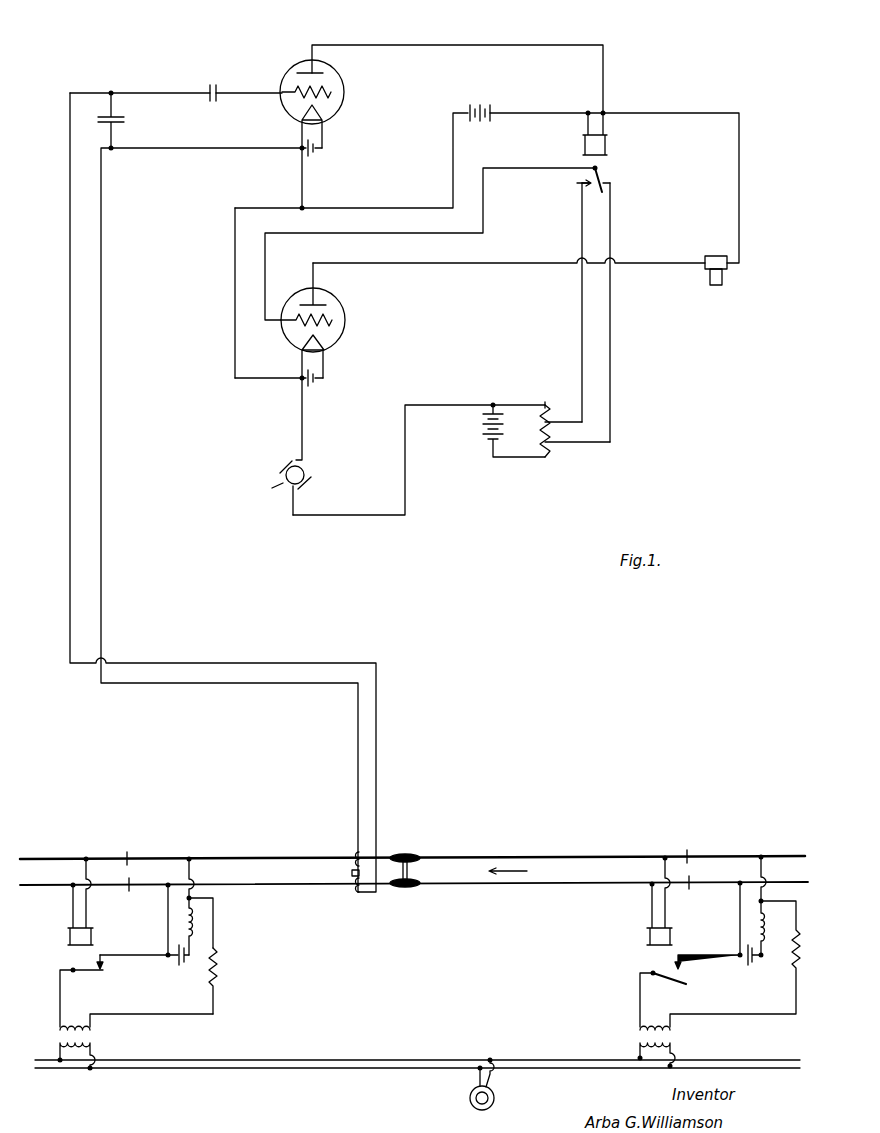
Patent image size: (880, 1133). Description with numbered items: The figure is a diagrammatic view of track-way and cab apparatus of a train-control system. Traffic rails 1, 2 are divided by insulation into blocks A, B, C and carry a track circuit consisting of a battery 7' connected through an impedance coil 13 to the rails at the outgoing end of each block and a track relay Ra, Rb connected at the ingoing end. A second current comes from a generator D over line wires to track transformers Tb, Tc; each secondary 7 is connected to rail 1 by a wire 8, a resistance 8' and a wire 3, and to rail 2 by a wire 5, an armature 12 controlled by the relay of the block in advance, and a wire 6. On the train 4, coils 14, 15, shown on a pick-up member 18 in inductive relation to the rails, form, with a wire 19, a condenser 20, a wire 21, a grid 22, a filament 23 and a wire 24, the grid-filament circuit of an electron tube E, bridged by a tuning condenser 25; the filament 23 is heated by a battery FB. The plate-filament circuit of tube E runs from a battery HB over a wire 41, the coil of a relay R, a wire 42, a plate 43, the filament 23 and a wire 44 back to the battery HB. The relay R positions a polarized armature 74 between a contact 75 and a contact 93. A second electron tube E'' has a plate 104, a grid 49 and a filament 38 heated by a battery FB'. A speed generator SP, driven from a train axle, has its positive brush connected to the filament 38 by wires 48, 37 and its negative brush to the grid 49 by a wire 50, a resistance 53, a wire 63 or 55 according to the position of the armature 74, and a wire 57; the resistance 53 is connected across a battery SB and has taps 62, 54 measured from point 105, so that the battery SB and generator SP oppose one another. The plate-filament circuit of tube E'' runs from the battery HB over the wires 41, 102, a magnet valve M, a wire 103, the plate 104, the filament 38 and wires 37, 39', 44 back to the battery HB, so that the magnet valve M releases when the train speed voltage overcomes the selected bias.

The traffic rail 1 is at (488, 857).
The traffic rail 2 is at (482, 885).
The wire 3 is at (215, 910).
The train 4 is at (409, 855).
The wire 5 is at (58, 993).
The wire 6 is at (166, 914).
The secondary 7 is at (75, 1014).
The battery 7' is at (178, 972).
The wire 8 is at (175, 1010).
The resistance 8' is at (235, 981).
The armature 12 is at (86, 974).
The impedance coil 13 is at (193, 928).
The coil 14 is at (354, 854).
The coil 15 is at (355, 891).
The pickup core 18 is at (351, 873).
The wire 19 is at (70, 412).
The condenser 20 is at (212, 84).
The wire 21 is at (248, 93).
The grid 22 is at (331, 92).
The filament 23 is at (322, 113).
The wire 24 is at (185, 150).
The tuning condenser 25 is at (126, 120).
The wire 37 is at (297, 366).
The filament 38 is at (325, 344).
The wire 39' is at (215, 293).
The wire 41 is at (527, 114).
The wire 42 is at (472, 38).
The plate 43 is at (323, 73).
The wire 44 is at (395, 208).
The wire 48 is at (302, 430).
The grid 49 is at (332, 320).
The wire 50 is at (452, 405).
The resistance 53 is at (543, 423).
The tap 54 is at (550, 445).
The wire 55 is at (612, 320).
The wire 57 is at (527, 170).
The tap 62 is at (548, 420).
The wire 63 is at (580, 320).
The armature 74 is at (600, 170).
The contact 75 is at (612, 183).
The contact 93 is at (572, 185).
The wire 102 is at (666, 113).
The wire 103 is at (657, 265).
The plate 104 is at (326, 305).
The end point of resistance 105 is at (545, 403).
The electron tube E is at (336, 93).
The electron tube E'' is at (336, 320).
The battery FB is at (326, 157).
The battery FB' is at (324, 387).
The battery HB is at (483, 118).
The battery SB is at (501, 427).
The generator SP is at (286, 467).
The relay R is at (595, 133).
The magnet valve M is at (724, 271).
The track relay Ra is at (68, 936).
The track relay Rb is at (647, 938).
The track transformer Tb is at (86, 1053).
The track transformer Tc is at (666, 1047).
The block A is at (34, 840).
The block B is at (553, 840).
The block C is at (790, 837).
The generator D is at (496, 1097).